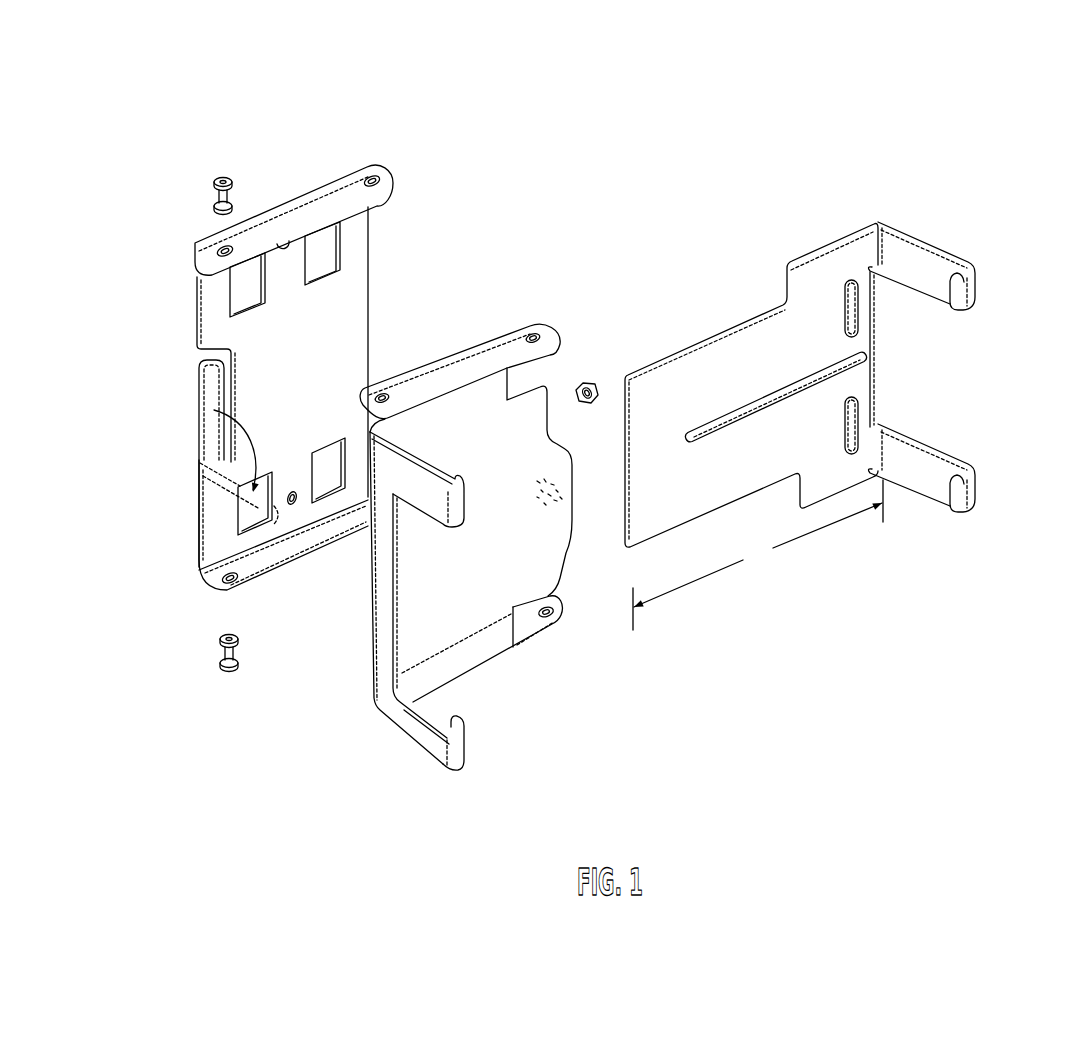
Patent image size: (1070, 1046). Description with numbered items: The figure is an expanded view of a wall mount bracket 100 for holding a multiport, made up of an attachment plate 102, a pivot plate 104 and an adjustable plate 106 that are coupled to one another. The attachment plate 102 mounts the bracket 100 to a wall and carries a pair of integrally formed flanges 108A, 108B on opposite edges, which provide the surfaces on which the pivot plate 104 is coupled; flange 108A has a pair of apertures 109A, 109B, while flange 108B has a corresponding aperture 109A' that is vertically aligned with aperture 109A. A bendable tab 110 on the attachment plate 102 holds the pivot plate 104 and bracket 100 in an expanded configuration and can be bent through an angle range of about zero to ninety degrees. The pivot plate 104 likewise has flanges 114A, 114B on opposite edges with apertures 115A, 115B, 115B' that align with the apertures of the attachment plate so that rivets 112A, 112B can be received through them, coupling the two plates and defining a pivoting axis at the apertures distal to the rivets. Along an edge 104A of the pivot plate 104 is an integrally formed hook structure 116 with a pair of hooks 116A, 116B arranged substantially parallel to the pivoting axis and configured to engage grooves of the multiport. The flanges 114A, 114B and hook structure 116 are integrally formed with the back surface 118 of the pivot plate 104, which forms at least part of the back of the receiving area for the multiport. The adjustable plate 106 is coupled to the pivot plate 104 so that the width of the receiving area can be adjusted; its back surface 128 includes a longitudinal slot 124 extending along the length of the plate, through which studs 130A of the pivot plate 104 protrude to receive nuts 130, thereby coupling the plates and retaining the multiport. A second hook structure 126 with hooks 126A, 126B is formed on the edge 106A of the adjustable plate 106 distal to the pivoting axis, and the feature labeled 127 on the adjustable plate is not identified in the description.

The wall mount bracket 100 is at (725, 184).
The attachment plate 102 is at (262, 158).
The pivot plate 104 is at (378, 763).
The edge of pivot plate 104A is at (372, 588).
The adjustable plate 106 is at (815, 612).
The edge of adjustable plate 106A is at (872, 400).
The flange 108A is at (300, 215).
The flange 108B is at (275, 548).
The aperture 109A is at (166, 280).
The aperture 109A' is at (174, 595).
The aperture 109B is at (397, 172).
The tab 110 is at (210, 393).
The rivet 112A is at (212, 194).
The rivet 112B is at (228, 670).
The flange 114A is at (453, 367).
The flange 114B is at (517, 633).
The aperture 115A is at (374, 384).
The aperture 115B is at (573, 298).
The aperture 115B' is at (580, 670).
The hook structure 116 is at (383, 551).
The hook 116A is at (427, 497).
The hook 116B is at (433, 745).
The back surface 118 is at (532, 545).
The longitudinal slot 124 is at (873, 355).
The hook structure 126 is at (980, 283).
The hook 126A is at (927, 263).
The hook 126B is at (927, 477).
The vertical slots 127 is at (850, 278).
The back surface 128 is at (700, 472).
The nut 130 is at (583, 376).
The stud 130A is at (563, 490).